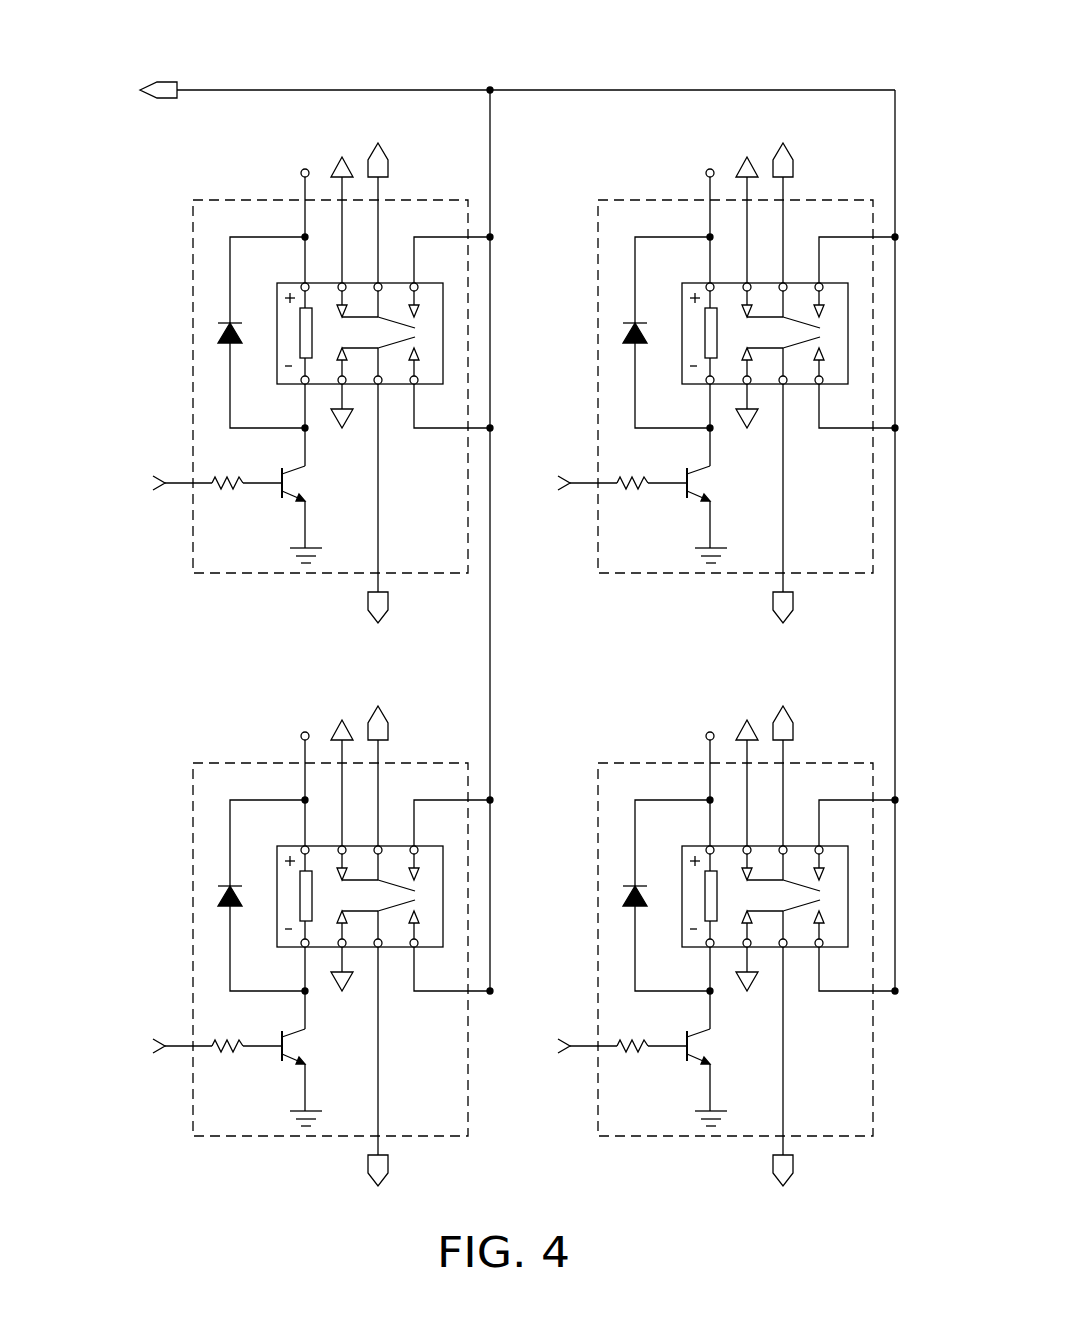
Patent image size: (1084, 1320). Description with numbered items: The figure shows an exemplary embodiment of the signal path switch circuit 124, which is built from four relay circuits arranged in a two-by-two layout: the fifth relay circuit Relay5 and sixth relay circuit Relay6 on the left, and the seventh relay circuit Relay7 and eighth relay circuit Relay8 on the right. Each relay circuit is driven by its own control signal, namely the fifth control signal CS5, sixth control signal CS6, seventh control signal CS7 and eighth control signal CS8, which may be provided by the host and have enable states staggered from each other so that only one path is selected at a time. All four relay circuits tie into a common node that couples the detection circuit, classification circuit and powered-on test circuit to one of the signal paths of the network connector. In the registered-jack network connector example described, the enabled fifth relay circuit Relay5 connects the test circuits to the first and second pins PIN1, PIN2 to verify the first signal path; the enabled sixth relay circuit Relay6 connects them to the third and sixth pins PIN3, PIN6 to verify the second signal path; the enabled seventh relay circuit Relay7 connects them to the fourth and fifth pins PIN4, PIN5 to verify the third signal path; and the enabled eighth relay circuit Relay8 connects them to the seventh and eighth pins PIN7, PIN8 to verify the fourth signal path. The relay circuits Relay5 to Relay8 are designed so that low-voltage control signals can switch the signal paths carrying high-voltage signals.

The signal path switch circuit 124 is at (137, 32).
The fifth relay circuit Relay5 is at (329, 356).
The sixth relay circuit Relay6 is at (329, 919).
The seventh relay circuit Relay7 is at (734, 356).
The eighth relay circuit Relay8 is at (734, 919).
The first pin PIN1 is at (390, 145).
The second pin PIN2 is at (390, 629).
The third pin PIN3 is at (390, 708).
The fourth pin PIN4 is at (795, 145).
The fifth pin PIN5 is at (795, 629).
The sixth pin PIN6 is at (390, 1192).
The seventh pin PIN7 is at (795, 708).
The eighth pin PIN8 is at (795, 1192).
The fifth control signal CS5 is at (131, 483).
The sixth control signal CS6 is at (131, 1046).
The seventh control signal CS7 is at (536, 483).
The eighth control signal CS8 is at (536, 1046).